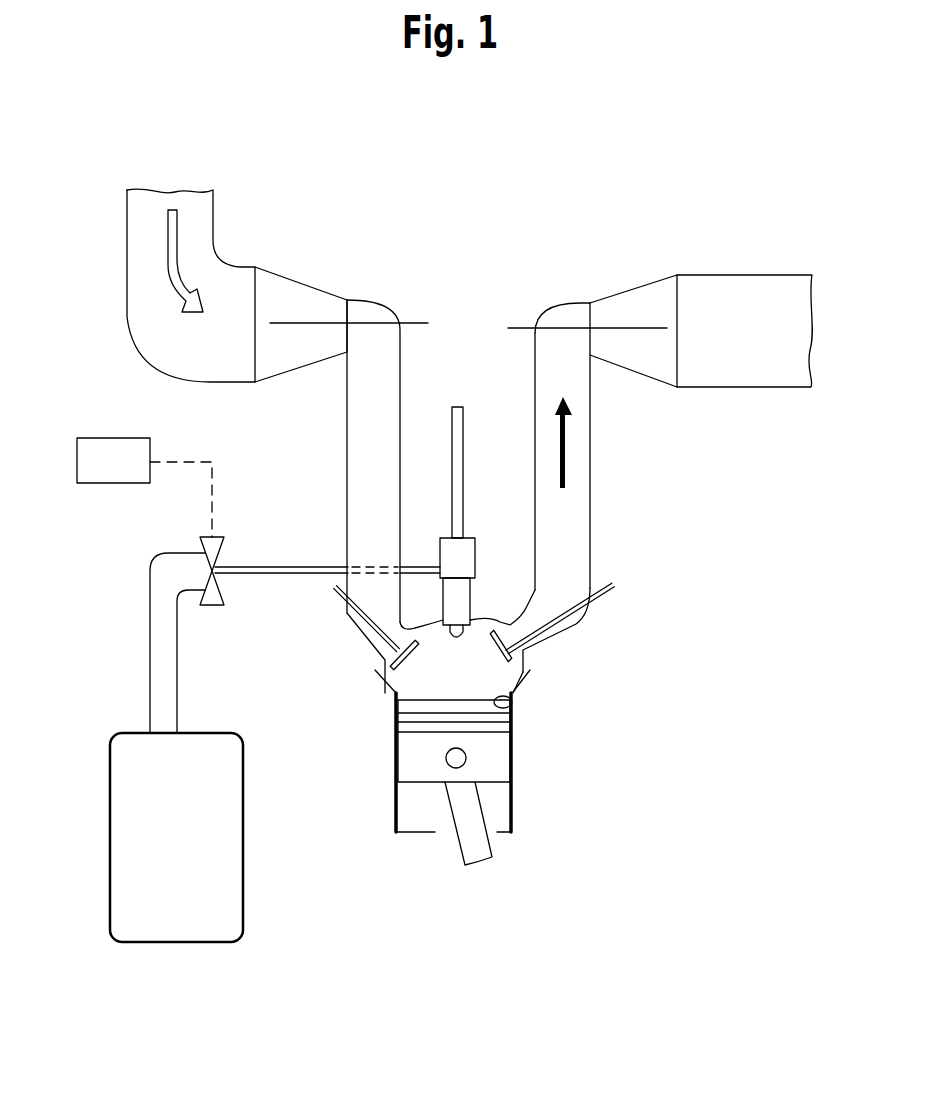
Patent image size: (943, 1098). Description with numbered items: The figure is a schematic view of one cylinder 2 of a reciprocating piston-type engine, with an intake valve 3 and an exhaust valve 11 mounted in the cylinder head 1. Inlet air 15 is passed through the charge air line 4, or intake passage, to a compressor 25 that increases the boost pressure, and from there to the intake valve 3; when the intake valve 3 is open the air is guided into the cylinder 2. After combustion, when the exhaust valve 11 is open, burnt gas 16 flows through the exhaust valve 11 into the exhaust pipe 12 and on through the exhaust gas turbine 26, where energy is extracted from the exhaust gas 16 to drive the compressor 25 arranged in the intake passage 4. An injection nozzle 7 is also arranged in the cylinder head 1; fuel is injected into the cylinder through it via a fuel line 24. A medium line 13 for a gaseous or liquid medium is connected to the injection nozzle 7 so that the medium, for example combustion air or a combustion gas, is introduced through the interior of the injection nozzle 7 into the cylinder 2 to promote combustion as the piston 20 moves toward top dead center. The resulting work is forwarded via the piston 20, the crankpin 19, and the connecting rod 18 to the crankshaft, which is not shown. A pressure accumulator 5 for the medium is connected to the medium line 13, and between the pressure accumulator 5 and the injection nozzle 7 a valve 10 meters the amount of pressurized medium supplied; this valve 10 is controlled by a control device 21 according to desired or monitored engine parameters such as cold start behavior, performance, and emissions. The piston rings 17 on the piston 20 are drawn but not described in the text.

The cylinder head 1 is at (490, 618).
The cylinder 2 is at (437, 673).
The intake valve 3 is at (340, 595).
The charge air line 4 is at (203, 218).
The pressure accumulator 5 is at (243, 855).
The injection nozzle 7 is at (448, 597).
The valve 10 is at (200, 540).
The exhaust valve 11 is at (615, 590).
The exhaust pipe 12 is at (573, 530).
The medium line 13 is at (292, 567).
The inlet air 15 is at (170, 245).
The burnt gas 16 is at (565, 450).
The piston rings 17 is at (515, 705).
The connecting rod 18 is at (463, 840).
The crankpin 19 is at (466, 758).
The piston 20 is at (423, 747).
The control device 21 is at (112, 438).
The fuel line 24 is at (457, 437).
The compressor 25 is at (304, 300).
The exhaust gas turbine 26 is at (640, 302).